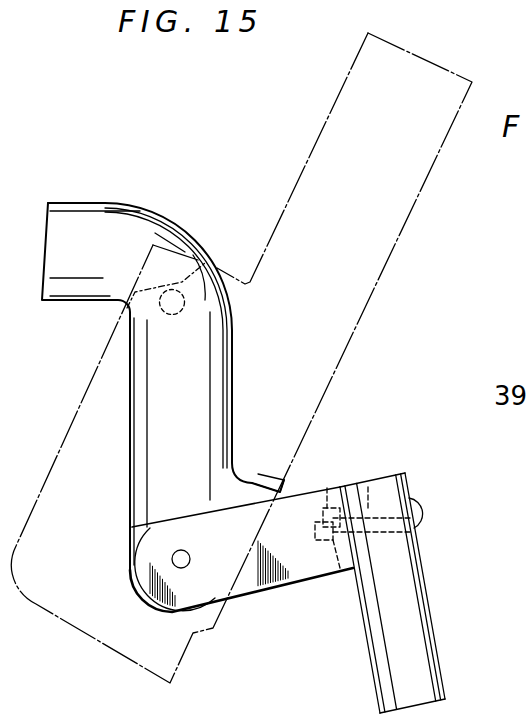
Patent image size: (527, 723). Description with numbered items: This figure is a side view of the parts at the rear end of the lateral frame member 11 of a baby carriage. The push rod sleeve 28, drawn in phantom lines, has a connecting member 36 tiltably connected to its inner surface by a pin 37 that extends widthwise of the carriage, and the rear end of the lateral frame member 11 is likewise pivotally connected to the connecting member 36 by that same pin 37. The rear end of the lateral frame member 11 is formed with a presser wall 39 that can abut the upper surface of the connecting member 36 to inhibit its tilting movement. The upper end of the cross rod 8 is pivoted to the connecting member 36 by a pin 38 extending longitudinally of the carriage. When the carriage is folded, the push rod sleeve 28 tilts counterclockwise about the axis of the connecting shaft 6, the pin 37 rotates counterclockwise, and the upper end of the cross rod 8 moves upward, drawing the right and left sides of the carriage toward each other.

The connecting shaft 6 is at (173, 300).
The cross rod 8 is at (442, 652).
The lateral frame member 11 is at (122, 222).
The push rod sleeve 28 is at (363, 313).
The connecting member 36 is at (303, 565).
The pin 37 is at (183, 567).
The pin 38 is at (365, 483).
The presser wall 39 is at (253, 483).